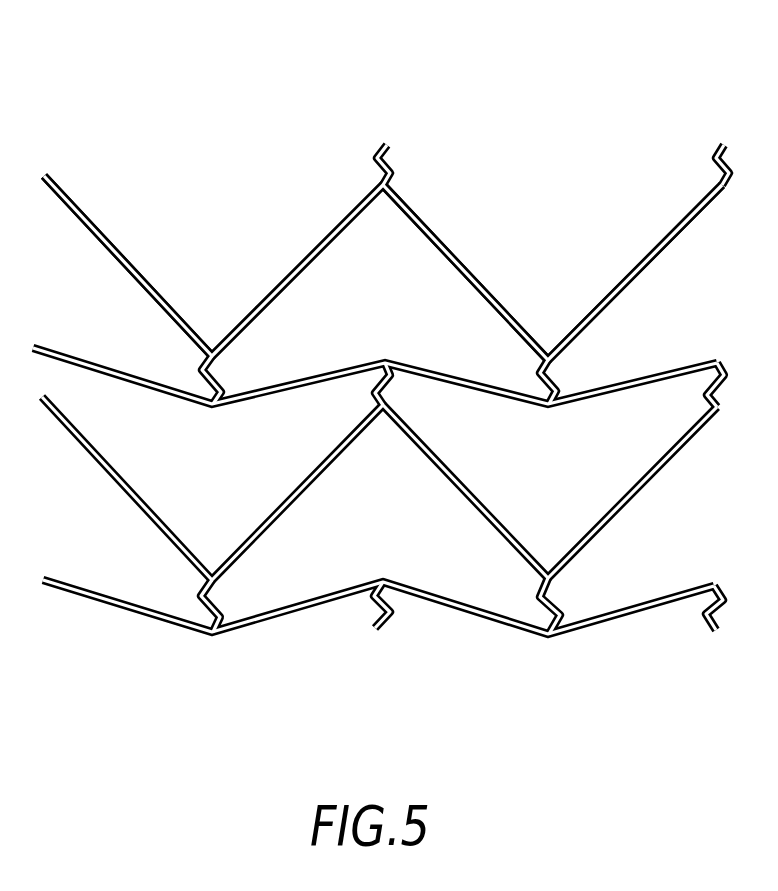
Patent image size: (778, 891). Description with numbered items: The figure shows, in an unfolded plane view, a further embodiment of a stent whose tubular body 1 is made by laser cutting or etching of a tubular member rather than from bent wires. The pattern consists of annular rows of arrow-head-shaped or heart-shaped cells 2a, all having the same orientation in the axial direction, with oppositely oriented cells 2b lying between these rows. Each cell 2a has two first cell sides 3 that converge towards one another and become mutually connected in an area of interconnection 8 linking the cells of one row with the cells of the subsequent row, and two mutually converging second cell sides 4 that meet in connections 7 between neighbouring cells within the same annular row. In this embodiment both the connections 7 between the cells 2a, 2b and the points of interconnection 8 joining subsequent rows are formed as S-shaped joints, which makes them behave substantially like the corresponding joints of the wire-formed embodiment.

The tubular body 1 is at (132, 112).
The cells 2a is at (398, 298).
The cells 2b is at (566, 512).
The first cell sides 3 is at (323, 382).
The second cell sides 4 is at (316, 246).
The connections 7 is at (227, 389).
The area of interconnection 8 is at (400, 390).